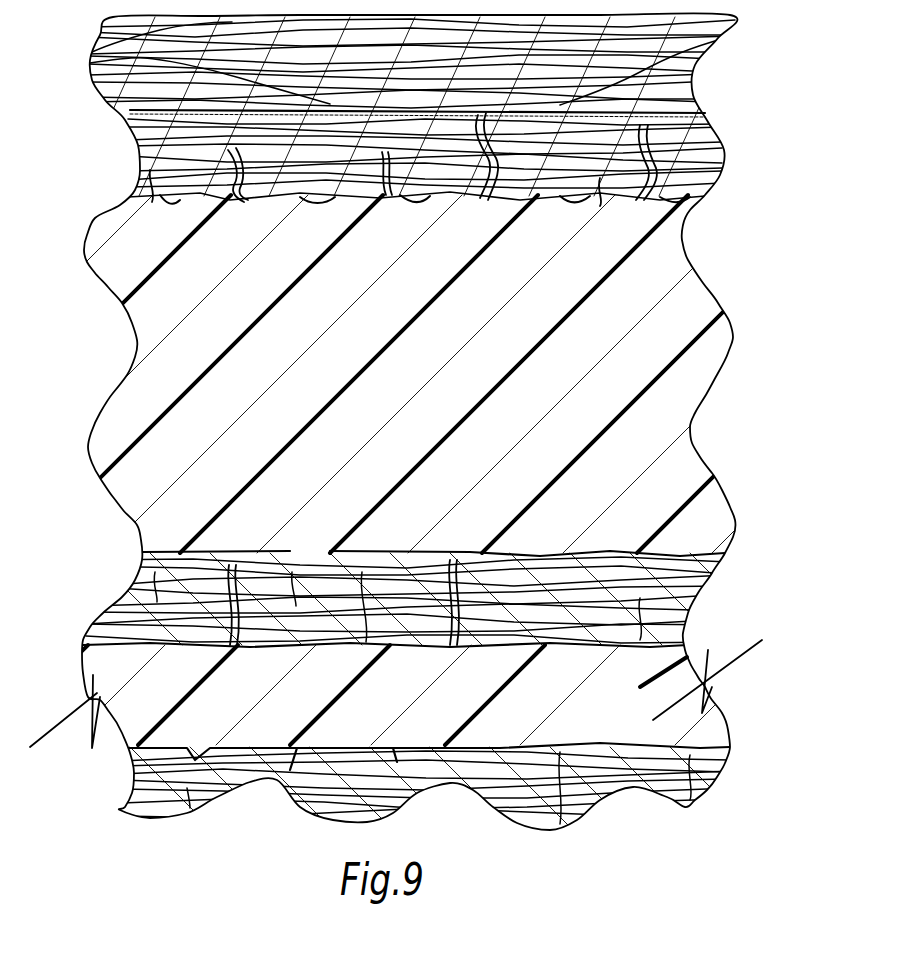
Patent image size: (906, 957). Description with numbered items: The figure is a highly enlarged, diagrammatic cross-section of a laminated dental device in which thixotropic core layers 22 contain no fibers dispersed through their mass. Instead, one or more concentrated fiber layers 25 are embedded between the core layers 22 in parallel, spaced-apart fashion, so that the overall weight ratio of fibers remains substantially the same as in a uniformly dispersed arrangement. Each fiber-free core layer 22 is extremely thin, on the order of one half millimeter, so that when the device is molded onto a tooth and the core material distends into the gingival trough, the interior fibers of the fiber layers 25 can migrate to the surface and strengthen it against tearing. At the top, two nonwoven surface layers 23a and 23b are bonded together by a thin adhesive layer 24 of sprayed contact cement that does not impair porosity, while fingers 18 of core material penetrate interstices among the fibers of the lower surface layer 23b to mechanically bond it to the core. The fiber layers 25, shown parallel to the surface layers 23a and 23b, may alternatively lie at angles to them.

The fingers 18 is at (236, 185).
The thixotropic core layers 22 is at (693, 381).
The surface layer 23a is at (100, 76).
The surface layer 23b is at (147, 148).
The adhesive layer 24 is at (703, 116).
The concentrated fiber layers 25 is at (680, 607).